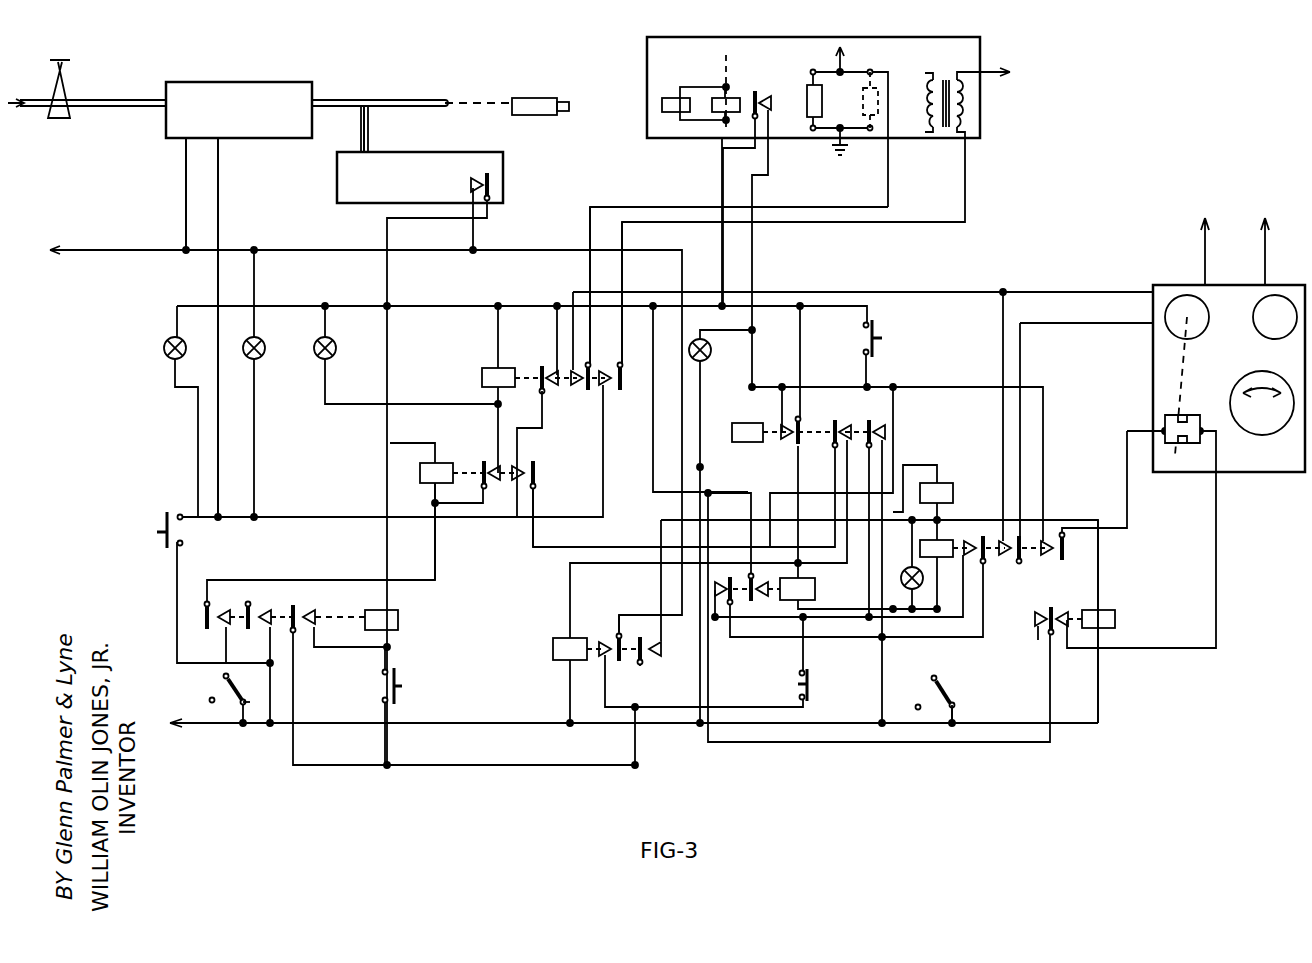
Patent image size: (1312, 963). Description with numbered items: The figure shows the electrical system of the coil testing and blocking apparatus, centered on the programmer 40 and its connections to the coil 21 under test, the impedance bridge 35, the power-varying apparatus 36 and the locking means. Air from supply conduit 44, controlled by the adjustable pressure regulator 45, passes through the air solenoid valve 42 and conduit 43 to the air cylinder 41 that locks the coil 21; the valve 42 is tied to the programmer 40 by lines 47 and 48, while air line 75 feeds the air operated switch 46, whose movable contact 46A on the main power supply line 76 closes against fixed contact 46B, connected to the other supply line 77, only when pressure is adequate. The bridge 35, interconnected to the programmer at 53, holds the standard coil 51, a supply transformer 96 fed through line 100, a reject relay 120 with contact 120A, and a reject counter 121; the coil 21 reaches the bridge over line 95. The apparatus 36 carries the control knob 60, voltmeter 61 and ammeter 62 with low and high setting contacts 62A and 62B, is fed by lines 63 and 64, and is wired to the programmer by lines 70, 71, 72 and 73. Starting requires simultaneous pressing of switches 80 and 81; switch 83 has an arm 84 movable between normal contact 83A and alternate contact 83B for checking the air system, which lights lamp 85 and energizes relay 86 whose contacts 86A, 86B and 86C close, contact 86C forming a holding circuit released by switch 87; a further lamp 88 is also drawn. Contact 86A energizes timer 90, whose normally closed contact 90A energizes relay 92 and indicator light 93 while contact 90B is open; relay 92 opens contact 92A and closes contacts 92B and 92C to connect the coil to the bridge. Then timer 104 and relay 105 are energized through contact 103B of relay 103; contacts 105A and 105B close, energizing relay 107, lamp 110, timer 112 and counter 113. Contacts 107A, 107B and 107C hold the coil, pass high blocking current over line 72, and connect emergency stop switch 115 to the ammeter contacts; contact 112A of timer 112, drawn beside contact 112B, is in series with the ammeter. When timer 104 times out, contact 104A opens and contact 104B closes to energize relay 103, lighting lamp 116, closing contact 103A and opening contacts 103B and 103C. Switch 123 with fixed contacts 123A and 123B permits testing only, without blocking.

The electrical strip conductor coil 21 is at (882, 88).
The electrical device 35 is at (1044, 84).
The apparatus for varying electrical power 36 is at (1272, 500).
The electrical programmer 40 is at (84, 336).
The pneumatic actuator 41 is at (530, 115).
The air solenoid valve 42 is at (238, 82).
The conduit 43 is at (332, 98).
The conduit 44 is at (126, 98).
The adjustable pressure regulator 45 is at (65, 75).
The air operated switch 46 is at (337, 185).
The movable contact 46A is at (480, 178).
The fixed contact 46B is at (495, 198).
The electrical line 47 is at (186, 180).
The electrical line 48 is at (218, 178).
The standard coil 51 is at (807, 88).
The interconnection 53 is at (997, 184).
The control knob 60 is at (1255, 430).
The voltmeter 61 is at (1280, 296).
The ammeter 62 is at (1182, 296).
The adjustable setting contacts 62A is at (1165, 415).
The adjustable setting contacts 62B is at (1187, 445).
The power line 63 is at (1268, 248).
The power line 64 is at (1195, 245).
The line 70 is at (1098, 530).
The line 71 is at (1130, 655).
The line 72 is at (1022, 355).
The line 73 is at (1045, 292).
The air line 75 is at (372, 110).
The main power supply line 76 is at (110, 250).
The power supply line 77 is at (225, 727).
The switch 80 is at (145, 521).
The manually actuated switch 81 is at (416, 679).
The switch 83 is at (192, 690).
The fixed contact 83A is at (250, 703).
The alternate fixed contact 83B is at (208, 700).
The arm 84 is at (237, 690).
The lamp 85 is at (165, 340).
The relay 86 is at (395, 618).
The relay contact 86A is at (215, 600).
The relay contact 86B is at (258, 600).
The relay contact 86C is at (308, 608).
The switch 87 is at (820, 692).
The lamp 88 is at (262, 342).
The adjustable timer 90 is at (440, 463).
The timer contact 90A is at (485, 490).
The timer contact 90B is at (530, 487).
The relay 92 is at (482, 375).
The relay contact 92A is at (545, 392).
The relay contact 92B is at (580, 392).
The relay contact 92C is at (614, 392).
The indicator light 93 is at (318, 360).
The line 95 is at (888, 185).
The supply transformer 96 is at (977, 112).
The line 100 is at (965, 218).
The relay 103 is at (740, 423).
The relay contact 103A is at (793, 446).
The relay contact 103B is at (845, 425).
The relay contact 103C is at (880, 432).
The timer 104 is at (805, 598).
The timer contact 104A is at (722, 605).
The timer contact 104B is at (748, 580).
The relay 105 is at (553, 650).
The relay contact 105A is at (608, 660).
The relay contact 105B is at (648, 665).
The relay 107 is at (960, 540).
The relay contact 107A is at (978, 560).
The relay contact 107B is at (1015, 562).
The relay contact 107C is at (1058, 535).
The lamp 110 is at (920, 588).
The timer 112 is at (1100, 622).
The timer contact 112A is at (1056, 635).
The relay contact 112B is at (1040, 638).
The counter 113 is at (945, 490).
The emergency stop switch 115 is at (878, 336).
The lamp 116 is at (711, 352).
The relay 120 is at (738, 98).
The relay contact 120A is at (760, 112).
The reject counter 121 is at (662, 105).
The switch 123 is at (963, 694).
The fixed contact 123A is at (955, 712).
The fixed contact 123B is at (916, 712).